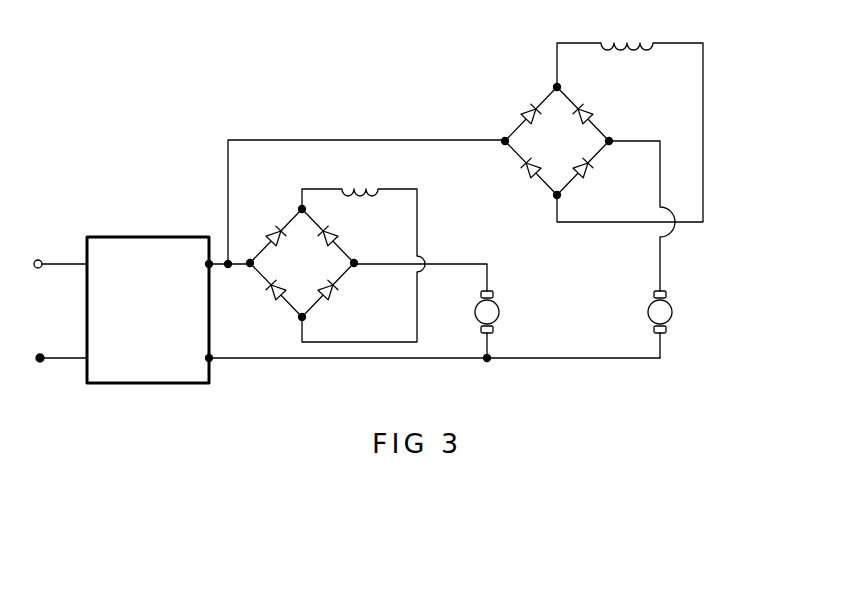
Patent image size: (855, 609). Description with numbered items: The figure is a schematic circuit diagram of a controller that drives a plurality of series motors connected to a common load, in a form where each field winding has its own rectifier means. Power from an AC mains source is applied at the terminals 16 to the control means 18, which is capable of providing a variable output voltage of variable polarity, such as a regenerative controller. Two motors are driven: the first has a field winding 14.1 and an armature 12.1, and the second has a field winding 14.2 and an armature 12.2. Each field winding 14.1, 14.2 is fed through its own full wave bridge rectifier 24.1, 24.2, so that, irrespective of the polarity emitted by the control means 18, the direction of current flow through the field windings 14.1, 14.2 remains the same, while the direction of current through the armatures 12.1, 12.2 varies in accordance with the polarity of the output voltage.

The terminals 16 is at (38, 270).
The control means 18 is at (149, 251).
The full wave bridge rectifier 24.1 is at (266, 230).
The field winding 14.1 is at (379, 186).
The armature 12.1 is at (500, 312).
The full wave bridge rectifier 24.2 is at (518, 108).
The field winding 14.2 is at (615, 40).
The armature 12.2 is at (673, 312).